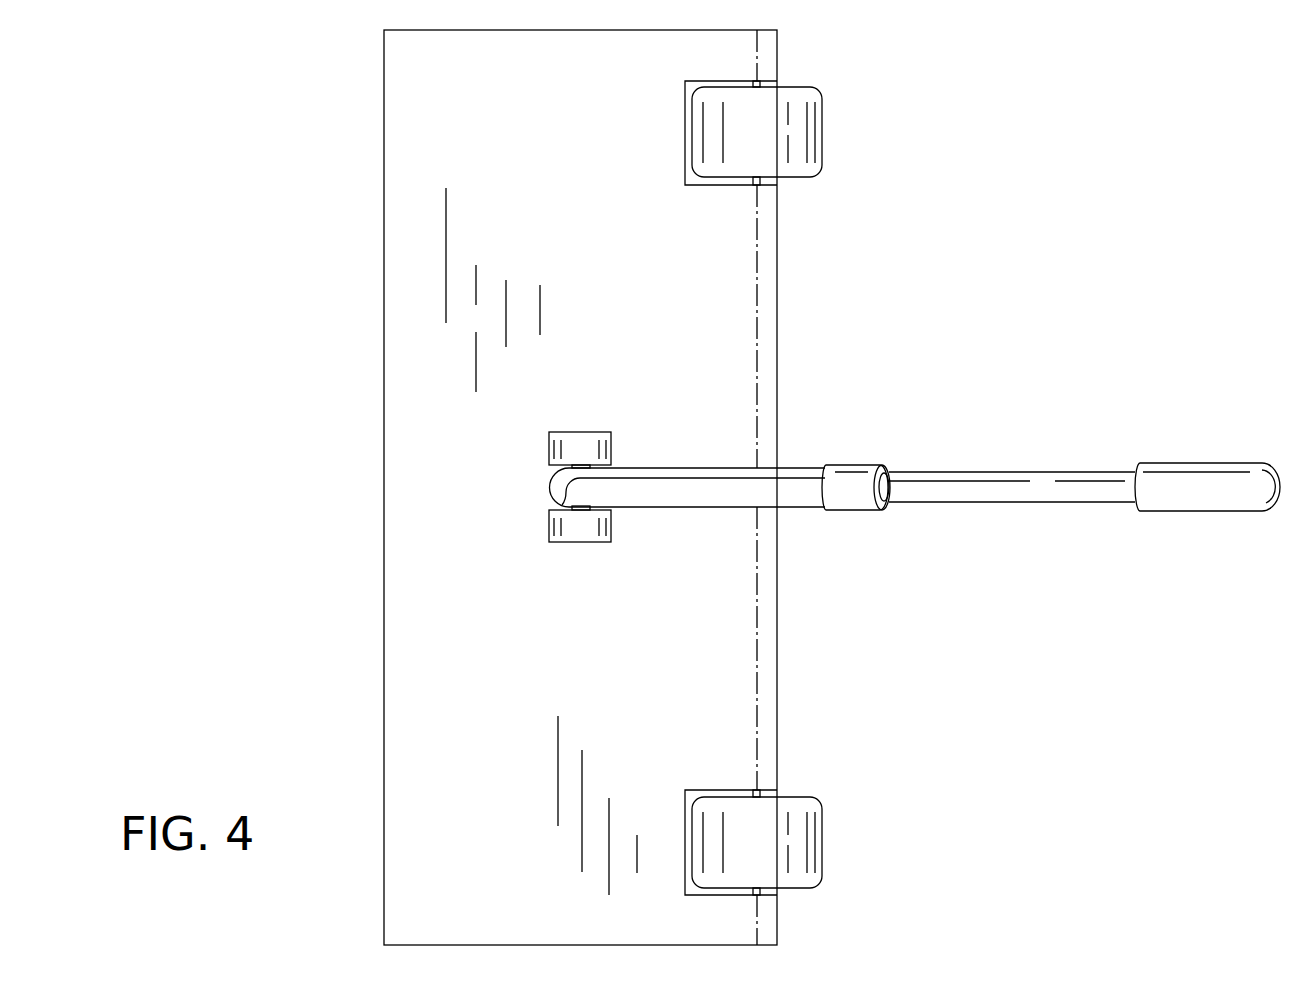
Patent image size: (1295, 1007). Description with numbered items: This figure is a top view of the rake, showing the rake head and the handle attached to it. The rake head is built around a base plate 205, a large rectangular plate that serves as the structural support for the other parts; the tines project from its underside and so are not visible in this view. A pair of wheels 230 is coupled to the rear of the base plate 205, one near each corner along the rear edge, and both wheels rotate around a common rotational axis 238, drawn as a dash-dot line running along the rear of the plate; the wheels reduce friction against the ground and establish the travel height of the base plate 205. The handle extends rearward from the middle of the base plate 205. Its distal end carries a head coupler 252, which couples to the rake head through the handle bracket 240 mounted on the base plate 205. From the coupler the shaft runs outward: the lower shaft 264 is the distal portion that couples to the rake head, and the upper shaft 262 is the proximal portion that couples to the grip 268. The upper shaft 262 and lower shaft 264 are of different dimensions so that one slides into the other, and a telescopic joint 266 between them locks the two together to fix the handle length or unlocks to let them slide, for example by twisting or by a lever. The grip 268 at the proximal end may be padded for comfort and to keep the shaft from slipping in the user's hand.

The base plate 205 is at (398, 96).
The pair of wheels 230 is at (813, 113).
The common rotational axis 238 is at (757, 327).
The head coupler 252 is at (572, 468).
The handle bracket 240 is at (577, 535).
The lower shaft 264 is at (720, 498).
The telescopic joint 266 is at (866, 478).
The upper shaft 262 is at (1018, 500).
The grip 268 is at (1207, 502).